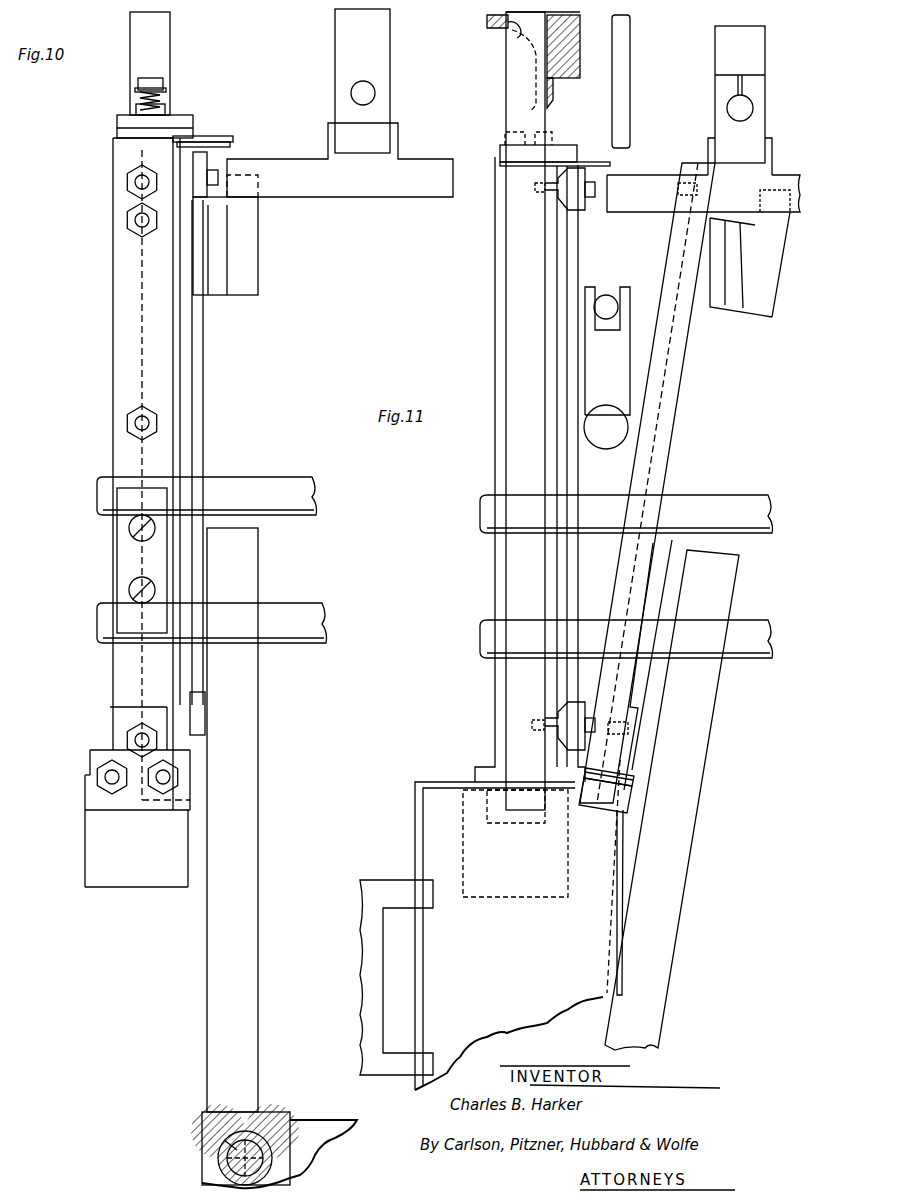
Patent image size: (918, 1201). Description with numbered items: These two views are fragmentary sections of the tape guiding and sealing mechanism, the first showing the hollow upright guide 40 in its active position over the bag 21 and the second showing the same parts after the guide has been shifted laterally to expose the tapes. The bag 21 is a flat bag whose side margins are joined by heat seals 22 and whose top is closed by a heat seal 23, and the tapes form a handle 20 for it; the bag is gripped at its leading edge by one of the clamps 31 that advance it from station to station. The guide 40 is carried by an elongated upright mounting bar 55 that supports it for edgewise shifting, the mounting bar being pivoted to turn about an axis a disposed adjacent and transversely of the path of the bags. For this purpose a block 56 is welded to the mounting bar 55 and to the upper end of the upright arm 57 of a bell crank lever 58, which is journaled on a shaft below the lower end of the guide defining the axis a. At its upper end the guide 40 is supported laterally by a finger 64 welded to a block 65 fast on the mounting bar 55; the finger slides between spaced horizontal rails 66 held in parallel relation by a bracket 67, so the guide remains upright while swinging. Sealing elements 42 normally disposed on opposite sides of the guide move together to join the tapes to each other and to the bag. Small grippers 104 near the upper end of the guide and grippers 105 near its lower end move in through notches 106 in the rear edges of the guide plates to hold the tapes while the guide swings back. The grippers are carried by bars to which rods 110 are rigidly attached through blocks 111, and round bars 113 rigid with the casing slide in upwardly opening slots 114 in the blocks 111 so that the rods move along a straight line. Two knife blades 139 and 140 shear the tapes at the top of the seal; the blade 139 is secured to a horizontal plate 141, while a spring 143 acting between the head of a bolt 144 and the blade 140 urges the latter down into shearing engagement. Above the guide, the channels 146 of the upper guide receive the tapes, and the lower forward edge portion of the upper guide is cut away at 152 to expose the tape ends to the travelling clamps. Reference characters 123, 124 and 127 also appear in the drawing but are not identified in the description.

In FIG. 11, the handle 20 is at (505, 548).
In FIG. 11, the bag 21 is at (423, 835).
In FIG. 11, the heat seals 22 is at (415, 815).
In FIG. 11, the heat seal 23 is at (450, 782).
In FIG. 11, the clamps 31 is at (392, 882).
In FIG. 10, the guide 40 is at (138, 357).
In FIG. 11, the guide 40 is at (672, 260).
In FIG. 10, the sealing elements 42 is at (118, 380).
In FIG. 11, the sealing elements 42 is at (495, 578).
In FIG. 10, the mounting bar 55 is at (188, 402).
In FIG. 11, the mounting bar 55 is at (697, 357).
In FIG. 10, the block 56 is at (200, 555).
In FIG. 11, the block 56 is at (683, 552).
In FIG. 10, the upright arm 57 is at (250, 733).
In FIG. 11, the upright arm 57 is at (697, 762).
In FIG. 10, the bell crank lever 58 is at (205, 1143).
In FIG. 10, the axis a is at (224, 1135).
In FIG. 10, the finger 64 is at (252, 256).
In FIG. 11, the finger 64 is at (768, 312).
In FIG. 11, the block 65 is at (730, 311).
In FIG. 10, the rails 66 is at (305, 193).
In FIG. 11, the rails 66 is at (788, 180).
In FIG. 10, the bracket 67 is at (386, 63).
In FIG. 11, the bracket 67 is at (762, 60).
In FIG. 10, the grippers 104 is at (203, 162).
In FIG. 11, the grippers 104 is at (556, 184).
In FIG. 10, the grippers 105 is at (200, 697).
In FIG. 11, the grippers 105 is at (555, 718).
In FIG. 11, the notches 106 is at (598, 728).
In FIG. 11, the rods 110 is at (605, 440).
In FIG. 11, the blocks 111 is at (628, 348).
In FIG. 11, the round bars 113 is at (600, 300).
In FIG. 11, the slots 114 is at (612, 298).
In FIG. 11, the washer 123 is at (538, 192).
In FIG. 10, the nut 124 is at (133, 182).
In FIG. 10, the cross bar 127 is at (300, 487).
In FIG. 11, the cross bar 127 is at (748, 497).
In FIG. 10, the knife blade 139 is at (230, 145).
In FIG. 11, the knife blade 139 is at (598, 162).
In FIG. 10, the knife blade 140 is at (228, 136).
In FIG. 11, the horizontal plate 141 is at (560, 146).
In FIG. 10, the spring 143 is at (140, 100).
In FIG. 10, the bolt 144 is at (138, 82).
In FIG. 11, the channels 146 is at (512, 28).
In FIG. 11, the cut-away portion 152 is at (512, 48).